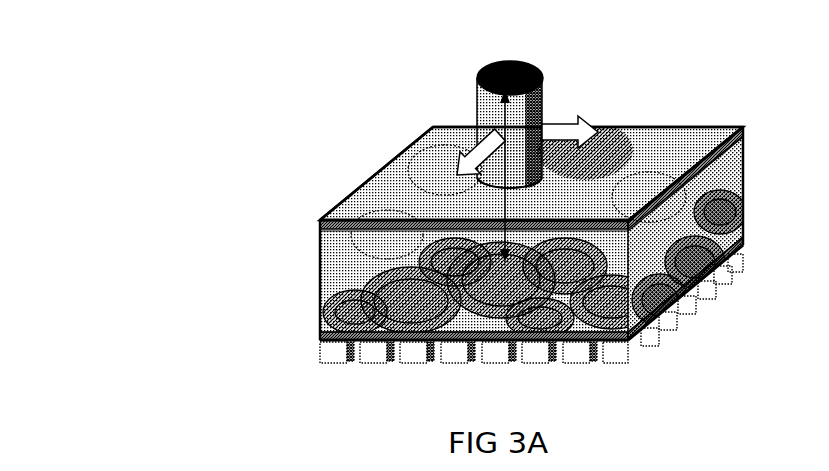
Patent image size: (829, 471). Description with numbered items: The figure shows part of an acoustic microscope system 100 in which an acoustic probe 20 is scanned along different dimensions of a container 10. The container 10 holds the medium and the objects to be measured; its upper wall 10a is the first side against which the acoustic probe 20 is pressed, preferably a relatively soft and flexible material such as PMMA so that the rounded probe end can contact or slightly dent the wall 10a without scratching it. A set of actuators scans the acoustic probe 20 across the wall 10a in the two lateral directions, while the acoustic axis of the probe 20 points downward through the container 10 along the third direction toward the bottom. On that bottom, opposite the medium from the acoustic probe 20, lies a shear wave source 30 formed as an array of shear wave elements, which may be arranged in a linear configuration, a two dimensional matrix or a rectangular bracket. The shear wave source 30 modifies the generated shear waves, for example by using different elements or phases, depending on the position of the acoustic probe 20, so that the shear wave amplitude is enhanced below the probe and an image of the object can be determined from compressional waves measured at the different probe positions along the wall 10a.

The acoustic microscope system 100 is at (131, 92).
The container 10 is at (306, 277).
The wall of the container 10a is at (692, 141).
The acoustic probe 20 is at (460, 94).
The shear wave source 30 is at (304, 352).